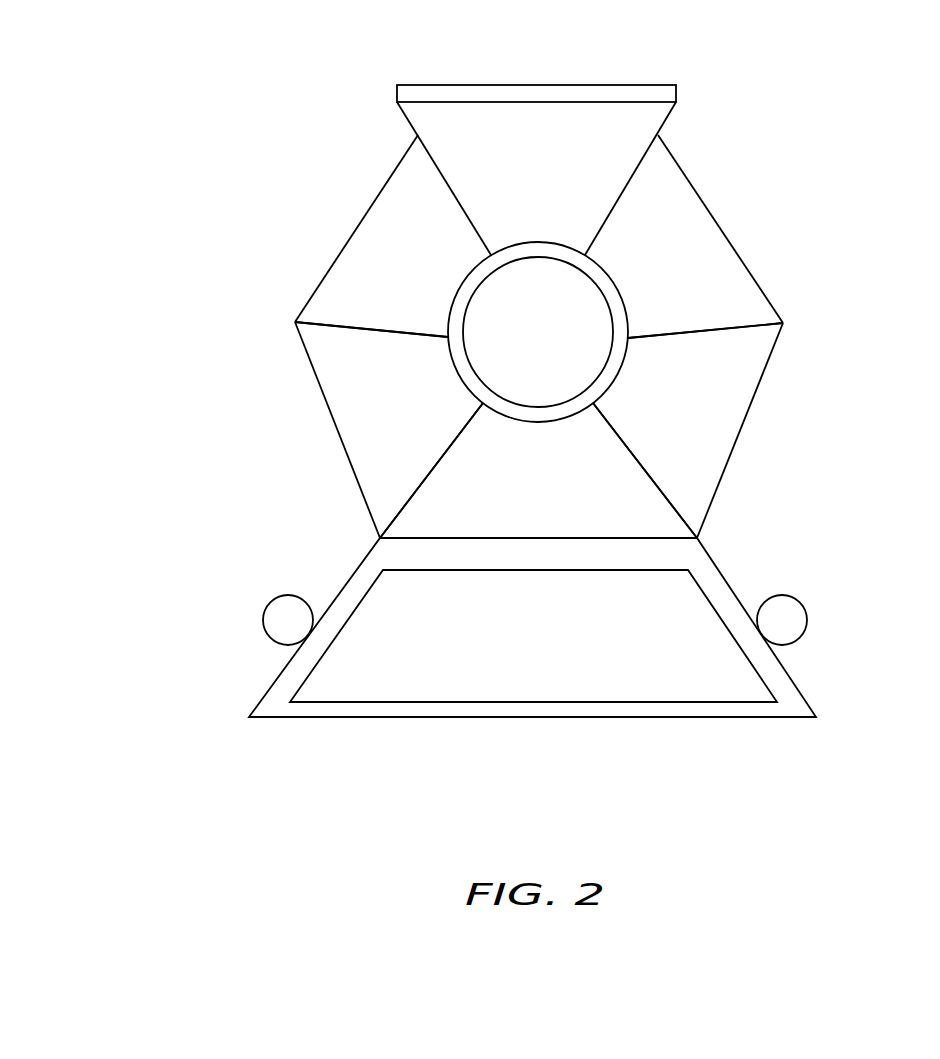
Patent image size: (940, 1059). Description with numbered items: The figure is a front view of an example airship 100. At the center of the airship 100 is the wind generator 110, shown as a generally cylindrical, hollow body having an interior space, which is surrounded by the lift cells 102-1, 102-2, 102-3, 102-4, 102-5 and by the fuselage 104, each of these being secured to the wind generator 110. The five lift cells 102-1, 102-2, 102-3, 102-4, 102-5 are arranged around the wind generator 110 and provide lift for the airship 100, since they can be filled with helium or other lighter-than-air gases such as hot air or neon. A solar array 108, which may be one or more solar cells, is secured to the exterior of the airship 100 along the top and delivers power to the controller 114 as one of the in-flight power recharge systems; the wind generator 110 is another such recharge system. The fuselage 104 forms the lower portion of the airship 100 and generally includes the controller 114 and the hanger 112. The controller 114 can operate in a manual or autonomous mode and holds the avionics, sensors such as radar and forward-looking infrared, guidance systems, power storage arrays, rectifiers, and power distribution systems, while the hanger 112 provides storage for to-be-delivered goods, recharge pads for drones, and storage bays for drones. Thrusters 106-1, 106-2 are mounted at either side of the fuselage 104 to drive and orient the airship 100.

The airship 100 is at (160, 72).
The lift cell 102-1 is at (536, 178).
The lift cell 102-2 is at (705, 236).
The lift cell 102-3 is at (688, 430).
The lift cell 102-4 is at (389, 430).
The lift cell 102-5 is at (371, 236).
The fuselage 104 is at (375, 724).
The thruster 106-1 is at (808, 616).
The thruster 106-2 is at (264, 615).
The solar array 108 is at (681, 87).
The wind generator 110 is at (472, 263).
The hanger 112 is at (533, 636).
The controller 114 is at (538, 470).